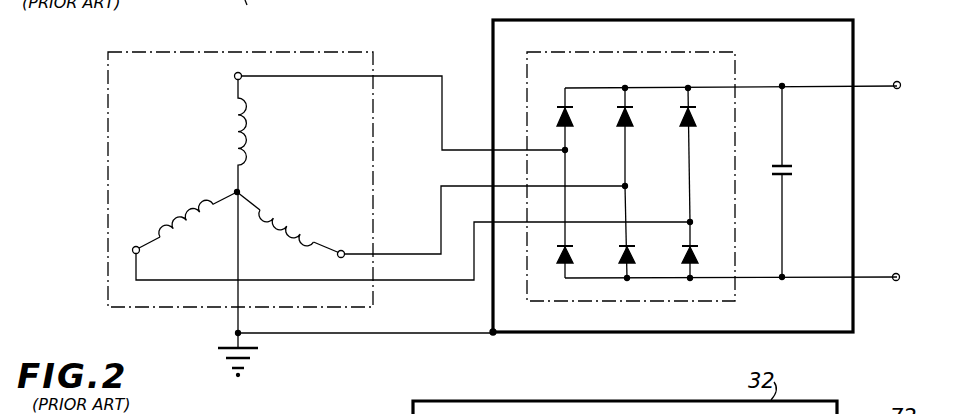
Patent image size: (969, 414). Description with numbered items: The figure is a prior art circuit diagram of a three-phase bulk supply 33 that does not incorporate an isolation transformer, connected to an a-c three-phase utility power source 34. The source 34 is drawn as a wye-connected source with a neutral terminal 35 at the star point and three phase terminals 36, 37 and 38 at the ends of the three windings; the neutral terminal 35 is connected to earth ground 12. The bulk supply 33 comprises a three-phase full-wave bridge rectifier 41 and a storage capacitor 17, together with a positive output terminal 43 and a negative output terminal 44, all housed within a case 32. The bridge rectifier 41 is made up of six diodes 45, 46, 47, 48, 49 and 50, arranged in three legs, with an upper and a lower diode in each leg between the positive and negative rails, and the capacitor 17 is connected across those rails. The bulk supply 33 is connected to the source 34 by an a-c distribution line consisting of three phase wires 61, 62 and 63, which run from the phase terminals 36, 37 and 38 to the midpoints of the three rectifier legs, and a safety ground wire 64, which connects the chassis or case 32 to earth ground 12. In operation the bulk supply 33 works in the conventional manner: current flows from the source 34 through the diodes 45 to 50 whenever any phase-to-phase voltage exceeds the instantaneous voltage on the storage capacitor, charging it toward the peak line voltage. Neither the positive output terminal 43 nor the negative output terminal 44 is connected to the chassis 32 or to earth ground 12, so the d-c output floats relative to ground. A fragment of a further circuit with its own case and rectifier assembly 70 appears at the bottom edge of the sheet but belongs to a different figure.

The earth ground 12 is at (228, 347).
The storage capacitor 17 is at (790, 168).
The case 32 is at (845, 18).
The three-phase bulk supply 33 is at (866, 44).
The three-phase utility power source 34 is at (160, 82).
The neutral terminal 35 is at (240, 191).
The phase terminal 36 is at (234, 76).
The phase terminal 37 is at (355, 232).
The phase terminal 38 is at (145, 236).
The three-phase full-wave bridge rectifier 41 is at (568, 80).
The positive output terminal 43 is at (910, 68).
The negative output terminal 44 is at (896, 273).
The diode 45 is at (572, 120).
The diode 46 is at (634, 120).
The diode 47 is at (697, 120).
The diode 48 is at (573, 246).
The diode 49 is at (635, 246).
The diode 50 is at (698, 246).
The phase wire 61 is at (438, 55).
The phase wire 62 is at (426, 226).
The phase wire 63 is at (410, 281).
The safety ground wire 64 is at (438, 335).
The rectifier assembly 70 is at (836, 383).